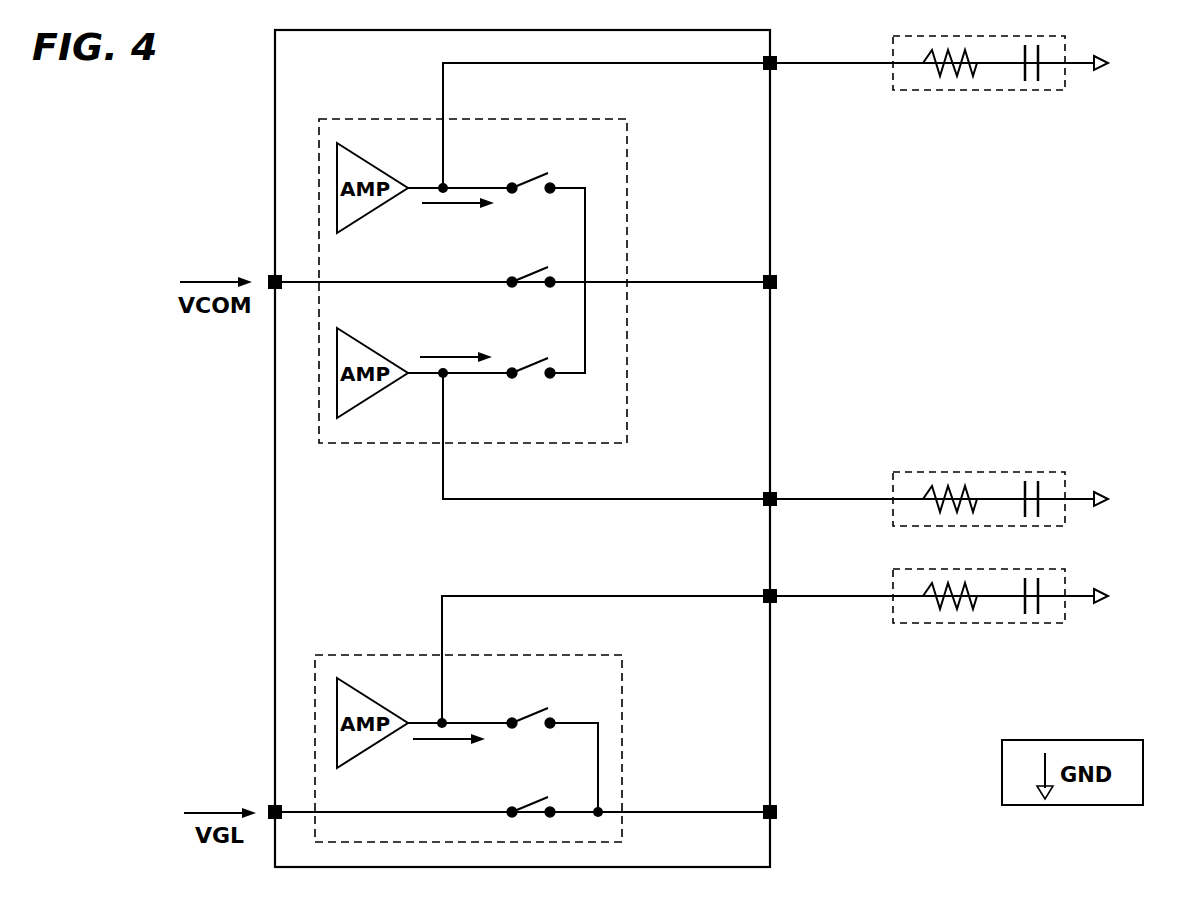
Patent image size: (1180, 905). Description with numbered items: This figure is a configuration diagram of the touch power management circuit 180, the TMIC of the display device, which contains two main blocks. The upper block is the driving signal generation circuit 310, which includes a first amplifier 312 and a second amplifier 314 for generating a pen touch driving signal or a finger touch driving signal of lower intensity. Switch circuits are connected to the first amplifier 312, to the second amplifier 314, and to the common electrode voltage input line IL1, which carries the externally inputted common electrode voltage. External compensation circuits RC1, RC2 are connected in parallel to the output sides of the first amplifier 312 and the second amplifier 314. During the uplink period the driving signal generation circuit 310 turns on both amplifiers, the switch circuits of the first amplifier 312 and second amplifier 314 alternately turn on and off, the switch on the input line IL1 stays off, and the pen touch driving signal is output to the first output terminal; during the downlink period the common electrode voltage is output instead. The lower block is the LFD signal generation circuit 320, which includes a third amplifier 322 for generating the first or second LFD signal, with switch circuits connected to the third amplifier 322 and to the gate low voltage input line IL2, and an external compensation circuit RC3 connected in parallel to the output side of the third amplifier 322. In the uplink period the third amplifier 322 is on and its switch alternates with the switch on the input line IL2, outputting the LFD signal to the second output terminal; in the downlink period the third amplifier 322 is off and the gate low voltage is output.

The touch power management circuit 180 is at (275, 548).
The driving signal generation circuit 310 is at (473, 314).
The first amplifier 312 is at (352, 225).
The second amplifier 314 is at (375, 395).
The LFD signal generation circuit 320 is at (468, 718).
The third amplifier 322 is at (352, 760).
The VCOM input line IL1 is at (348, 283).
The VGL input line IL2 is at (482, 812).
The external compensation circuit RC1 is at (945, 91).
The external compensation circuit RC2 is at (983, 471).
The external compensation circuit RC3 is at (957, 623).